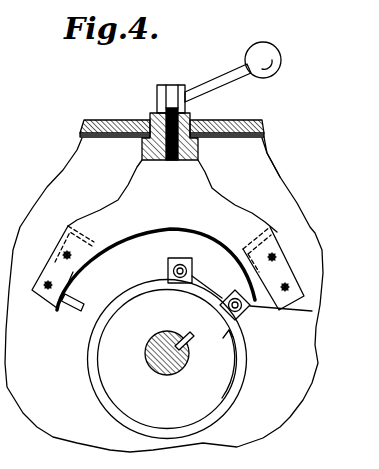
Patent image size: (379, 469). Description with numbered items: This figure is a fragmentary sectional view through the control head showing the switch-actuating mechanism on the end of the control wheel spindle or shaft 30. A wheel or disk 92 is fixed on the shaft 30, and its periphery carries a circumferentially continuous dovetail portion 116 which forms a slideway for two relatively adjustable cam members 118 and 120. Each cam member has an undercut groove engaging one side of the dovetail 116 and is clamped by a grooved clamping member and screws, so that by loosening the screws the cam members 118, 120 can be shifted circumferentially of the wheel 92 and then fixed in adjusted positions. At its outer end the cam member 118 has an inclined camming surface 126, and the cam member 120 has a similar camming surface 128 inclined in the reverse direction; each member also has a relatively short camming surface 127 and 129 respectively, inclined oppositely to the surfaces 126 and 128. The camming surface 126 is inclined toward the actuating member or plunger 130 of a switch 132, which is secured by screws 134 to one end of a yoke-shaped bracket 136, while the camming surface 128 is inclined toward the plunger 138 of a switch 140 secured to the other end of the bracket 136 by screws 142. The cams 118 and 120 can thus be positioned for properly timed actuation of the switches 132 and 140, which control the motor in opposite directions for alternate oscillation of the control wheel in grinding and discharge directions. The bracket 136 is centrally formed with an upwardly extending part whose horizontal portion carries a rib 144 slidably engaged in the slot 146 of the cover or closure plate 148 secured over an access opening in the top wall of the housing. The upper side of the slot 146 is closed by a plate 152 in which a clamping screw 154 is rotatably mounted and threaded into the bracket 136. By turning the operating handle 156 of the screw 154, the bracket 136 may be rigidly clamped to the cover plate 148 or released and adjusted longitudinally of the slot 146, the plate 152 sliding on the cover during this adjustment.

The control wheel spindle or shaft 30 is at (153, 357).
The wheel or disk 92 is at (167, 359).
The dovetail peripheral portion 116 is at (230, 415).
The cam member 118 is at (248, 313).
The cam member 120 is at (168, 266).
The inclined camming surface 126 is at (284, 249).
The short camming surface 127 is at (237, 296).
The camming surface 128 is at (175, 259).
The short camming surface 129 is at (192, 265).
The actuating member or plunger 130 is at (309, 312).
The switch 132 is at (313, 308).
The screws 134 is at (272, 254).
The yoke-shaped bracket 136 is at (235, 210).
The actuating member or plunger 138 is at (73, 310).
The switch 140 is at (48, 303).
The screws 142 is at (64, 255).
The rib 144 is at (144, 143).
The slot 146 is at (195, 122).
The cover or closure plate 148 is at (263, 120).
The plate 152 is at (158, 113).
The clamping screw 154 is at (169, 161).
The operating handle 156 is at (229, 68).